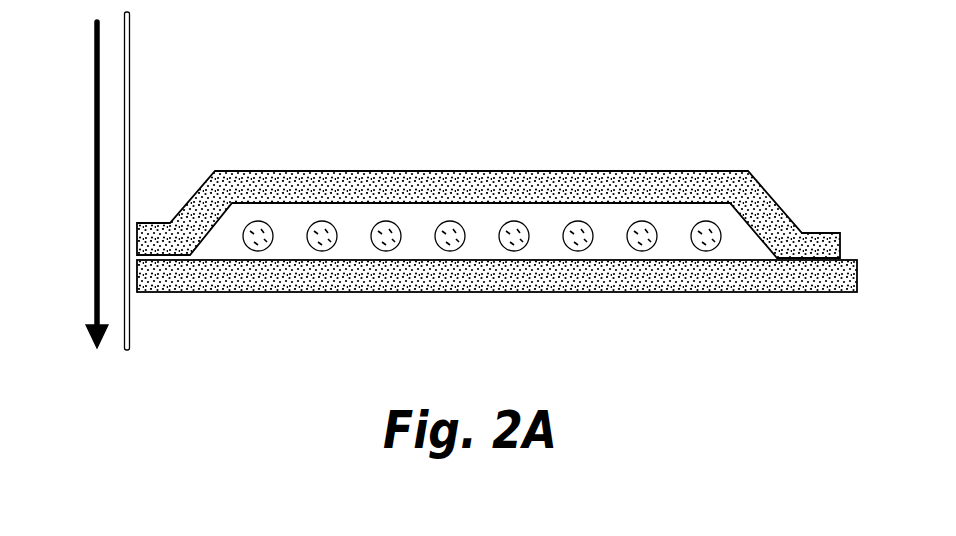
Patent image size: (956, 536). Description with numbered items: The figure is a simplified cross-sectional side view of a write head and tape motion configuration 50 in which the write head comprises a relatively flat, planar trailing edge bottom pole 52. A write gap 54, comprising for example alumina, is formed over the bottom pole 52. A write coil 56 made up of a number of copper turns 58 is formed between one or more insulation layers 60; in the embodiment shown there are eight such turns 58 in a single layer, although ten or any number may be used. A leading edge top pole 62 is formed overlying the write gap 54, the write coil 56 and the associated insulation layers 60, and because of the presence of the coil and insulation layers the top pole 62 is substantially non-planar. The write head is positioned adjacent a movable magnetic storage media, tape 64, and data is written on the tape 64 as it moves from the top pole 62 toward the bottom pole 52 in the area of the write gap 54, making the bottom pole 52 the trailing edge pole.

The write head and tape motion configuration 50 is at (505, 241).
The trailing edge bottom pole 52 is at (675, 293).
The write gap 54 is at (137, 257).
The write coil 56 is at (492, 211).
The turns 58 is at (641, 222).
The insulation layers 60 is at (283, 224).
The leading edge top pole 62 is at (603, 174).
The tape 64 is at (132, 102).